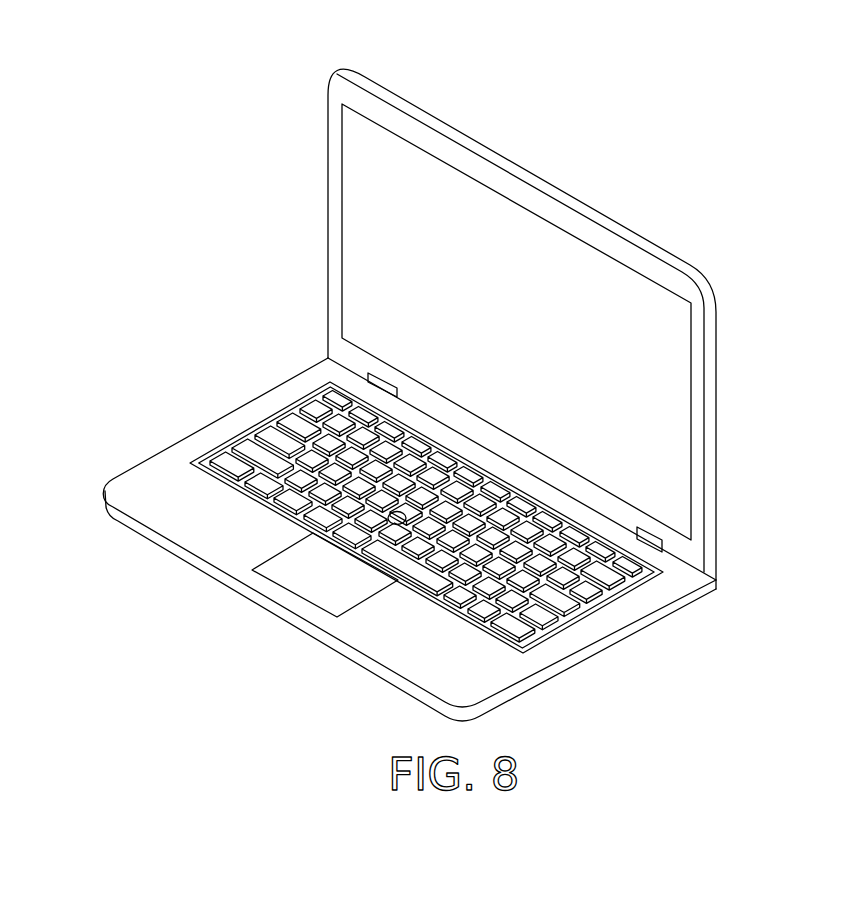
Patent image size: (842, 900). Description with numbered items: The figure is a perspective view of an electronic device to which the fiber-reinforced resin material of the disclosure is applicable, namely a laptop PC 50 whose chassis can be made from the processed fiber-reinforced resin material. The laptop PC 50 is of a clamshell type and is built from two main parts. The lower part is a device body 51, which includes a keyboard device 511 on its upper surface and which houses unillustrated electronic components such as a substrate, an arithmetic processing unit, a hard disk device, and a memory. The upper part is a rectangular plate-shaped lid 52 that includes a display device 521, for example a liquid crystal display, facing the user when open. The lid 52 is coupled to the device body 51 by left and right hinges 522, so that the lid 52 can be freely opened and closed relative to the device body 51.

The laptop PC 50 is at (272, 49).
The device body 51 is at (153, 458).
The keyboard device 511 is at (268, 428).
The lid 52 is at (615, 224).
The display device 521 is at (502, 243).
The hinges 522 is at (378, 372).